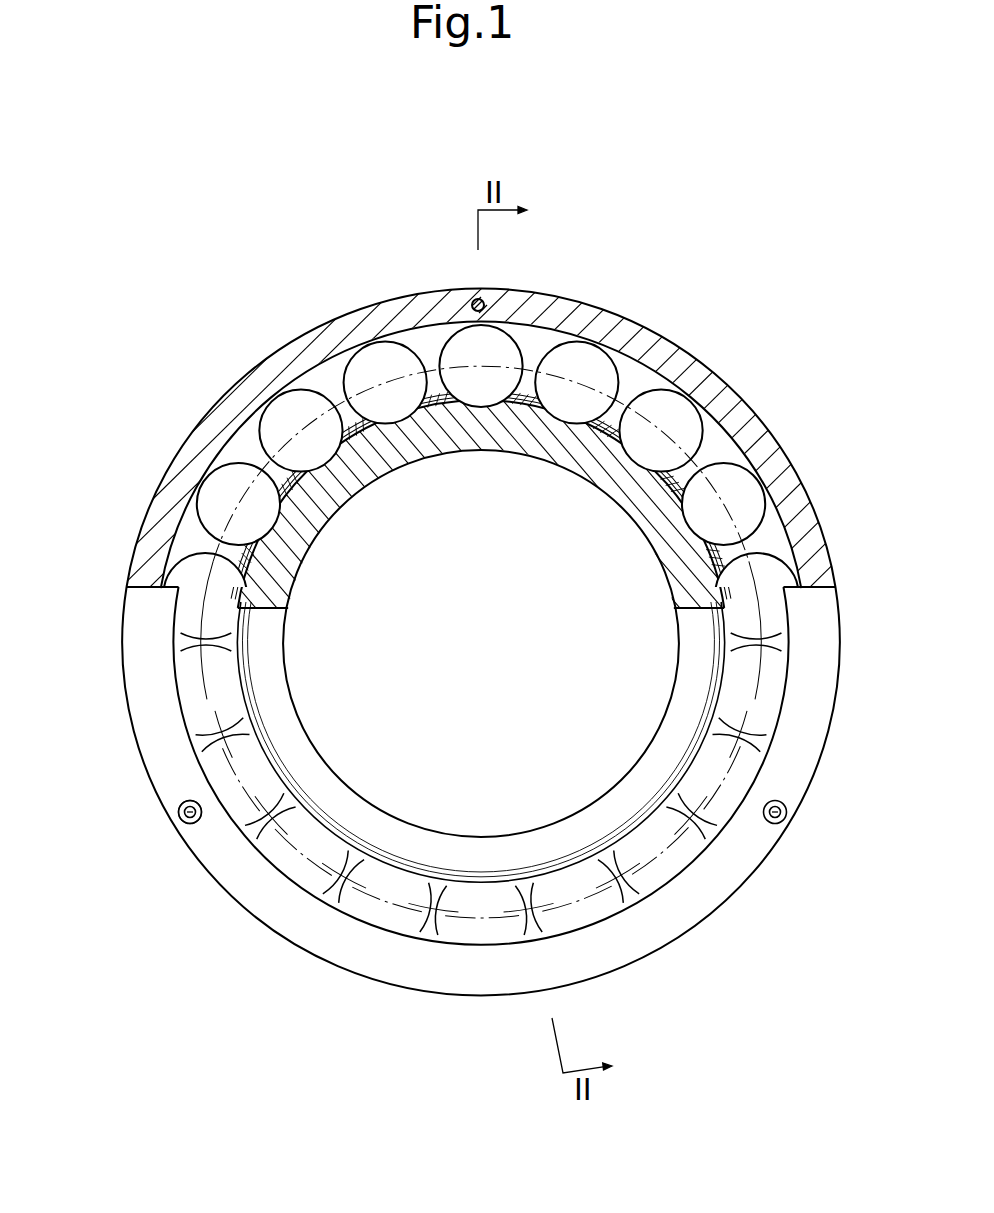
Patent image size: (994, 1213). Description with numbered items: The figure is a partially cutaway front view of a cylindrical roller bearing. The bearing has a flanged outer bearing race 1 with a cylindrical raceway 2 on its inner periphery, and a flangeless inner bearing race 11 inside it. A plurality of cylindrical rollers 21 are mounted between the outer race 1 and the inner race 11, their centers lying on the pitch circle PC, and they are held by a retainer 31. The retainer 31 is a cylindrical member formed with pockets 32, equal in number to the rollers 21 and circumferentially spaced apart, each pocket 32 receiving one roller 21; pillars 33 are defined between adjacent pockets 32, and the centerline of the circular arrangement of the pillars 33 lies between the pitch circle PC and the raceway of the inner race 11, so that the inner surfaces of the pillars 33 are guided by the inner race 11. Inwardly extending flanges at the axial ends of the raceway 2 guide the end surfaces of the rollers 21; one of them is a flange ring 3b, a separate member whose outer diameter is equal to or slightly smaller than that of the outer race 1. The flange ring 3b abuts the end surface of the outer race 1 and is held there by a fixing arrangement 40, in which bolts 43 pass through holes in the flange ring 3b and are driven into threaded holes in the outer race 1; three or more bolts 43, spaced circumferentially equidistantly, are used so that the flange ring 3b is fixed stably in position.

The outer bearing race 1 is at (250, 382).
The raceway 2 is at (418, 327).
The inner bearing race 11 is at (270, 468).
The cylindrical rollers 21 is at (367, 363).
The retainer 31 is at (222, 672).
The pockets 32 is at (605, 435).
The pillars 33 is at (717, 580).
The flange ring 3b is at (152, 745).
The fixing arrangement 40 is at (192, 830).
The bolts 43 is at (484, 300).
The pitch circle PC is at (700, 418).